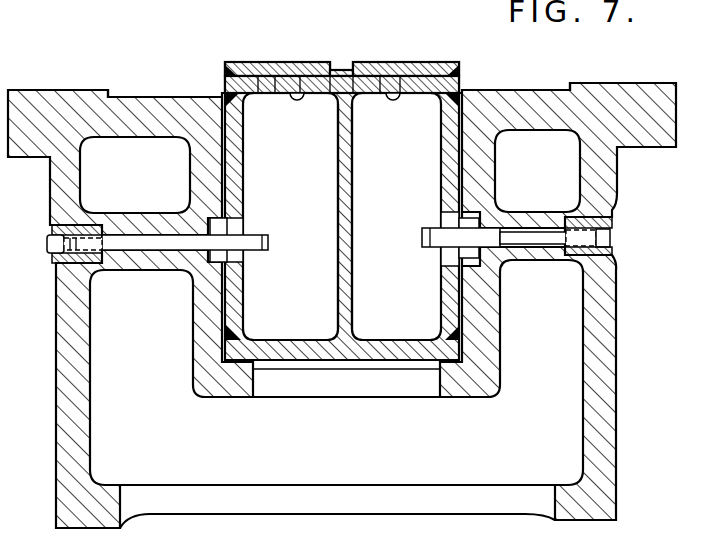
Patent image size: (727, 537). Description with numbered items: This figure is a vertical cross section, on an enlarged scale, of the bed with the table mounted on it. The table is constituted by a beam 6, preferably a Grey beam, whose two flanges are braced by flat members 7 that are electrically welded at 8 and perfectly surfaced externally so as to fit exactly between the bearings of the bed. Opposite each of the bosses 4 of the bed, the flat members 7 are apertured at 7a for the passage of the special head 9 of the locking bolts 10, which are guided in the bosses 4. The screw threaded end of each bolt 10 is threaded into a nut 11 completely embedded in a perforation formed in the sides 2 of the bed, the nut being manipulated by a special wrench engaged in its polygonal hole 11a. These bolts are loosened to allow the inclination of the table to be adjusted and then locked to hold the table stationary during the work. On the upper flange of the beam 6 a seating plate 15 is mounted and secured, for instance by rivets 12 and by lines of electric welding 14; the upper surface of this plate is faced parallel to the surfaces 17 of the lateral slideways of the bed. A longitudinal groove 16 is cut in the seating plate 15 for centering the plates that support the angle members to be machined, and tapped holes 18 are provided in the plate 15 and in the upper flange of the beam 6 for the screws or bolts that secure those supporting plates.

The sides of the bed 2 is at (600, 372).
The bosses of the bed 4 is at (520, 214).
The beam 6 is at (350, 216).
The flat members 7 is at (243, 178).
The apertures in the flat members 7a is at (245, 263).
The electric welds 8 is at (222, 95).
The special head of the locking bolt 9 is at (270, 243).
The locking bolts 10 is at (535, 240).
The nut 11 is at (613, 250).
The polygonal hole 11a is at (56, 249).
The rivets 12 is at (300, 97).
The lines of electric welding 14 is at (224, 70).
The seating plate 15 is at (262, 62).
The longitudinal groove 16 is at (338, 70).
The surfaces of the lateral slideways 17 is at (75, 92).
The tapped holes 18 is at (403, 62).